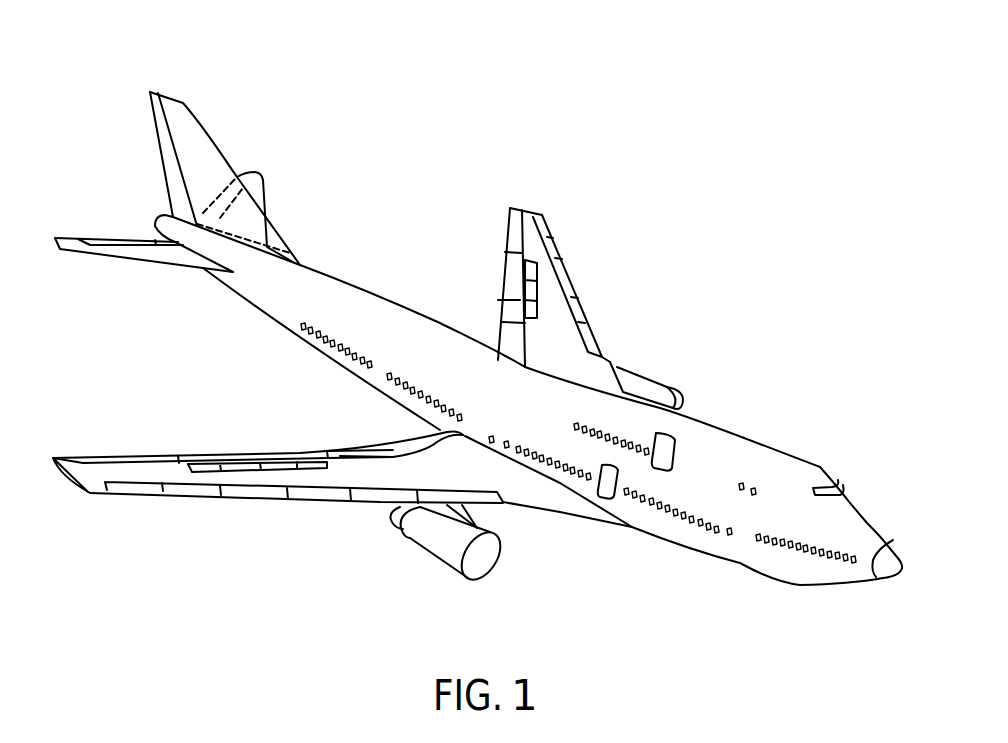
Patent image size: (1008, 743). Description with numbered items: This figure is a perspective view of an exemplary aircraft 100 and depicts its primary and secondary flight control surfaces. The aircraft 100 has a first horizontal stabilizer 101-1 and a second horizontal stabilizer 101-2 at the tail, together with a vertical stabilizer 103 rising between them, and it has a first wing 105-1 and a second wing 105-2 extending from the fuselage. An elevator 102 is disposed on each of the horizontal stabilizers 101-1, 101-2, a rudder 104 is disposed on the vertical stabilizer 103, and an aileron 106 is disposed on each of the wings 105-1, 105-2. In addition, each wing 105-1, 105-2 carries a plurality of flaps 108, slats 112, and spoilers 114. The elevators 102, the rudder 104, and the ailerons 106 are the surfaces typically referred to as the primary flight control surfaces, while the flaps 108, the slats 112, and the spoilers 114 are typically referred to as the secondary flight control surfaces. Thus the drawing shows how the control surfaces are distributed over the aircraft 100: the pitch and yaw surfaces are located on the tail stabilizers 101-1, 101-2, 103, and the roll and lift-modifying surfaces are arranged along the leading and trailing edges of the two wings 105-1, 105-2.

The aircraft 100 is at (643, 110).
The first horizontal stabilizer 101-1 is at (127, 260).
The second horizontal stabilizer 101-2 is at (267, 195).
The elevator 102 is at (223, 205).
The vertical stabilizer 103 is at (212, 135).
The rudder 104 is at (157, 110).
The first wing 105-1 is at (523, 485).
The second wing 105-2 is at (602, 375).
The aileron 106 is at (112, 462).
The flaps 108 is at (357, 453).
The slats 112 is at (368, 495).
The spoilers 114 is at (237, 467).